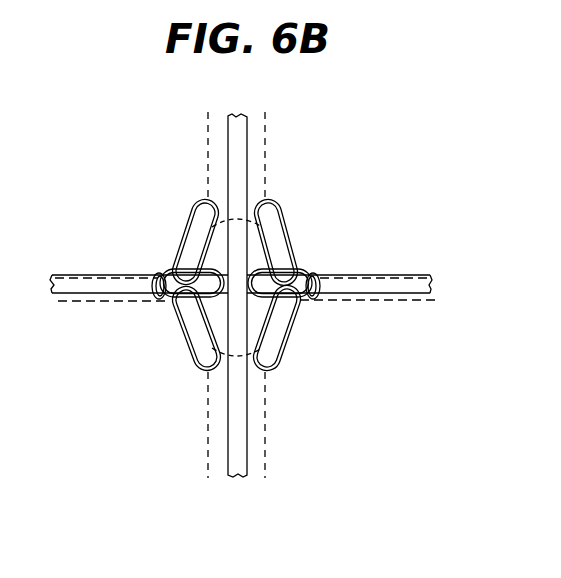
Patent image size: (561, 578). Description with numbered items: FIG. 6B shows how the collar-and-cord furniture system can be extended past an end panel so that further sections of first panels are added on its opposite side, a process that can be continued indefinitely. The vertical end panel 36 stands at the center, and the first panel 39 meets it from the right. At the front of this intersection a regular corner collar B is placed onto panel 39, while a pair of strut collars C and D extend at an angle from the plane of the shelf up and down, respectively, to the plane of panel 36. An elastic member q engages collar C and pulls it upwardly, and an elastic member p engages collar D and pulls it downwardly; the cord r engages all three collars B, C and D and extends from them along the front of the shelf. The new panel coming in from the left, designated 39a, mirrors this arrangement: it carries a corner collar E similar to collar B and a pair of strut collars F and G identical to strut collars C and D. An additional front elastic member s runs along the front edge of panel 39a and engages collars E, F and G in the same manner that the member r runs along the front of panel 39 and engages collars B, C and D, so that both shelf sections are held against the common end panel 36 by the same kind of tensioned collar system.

The end panel 36 is at (244, 168).
The first panel 39 is at (385, 288).
The new panel 39a is at (93, 288).
The elastic member q is at (266, 119).
The elastic member p is at (266, 413).
The front elastic member s is at (50, 277).
The cord r is at (438, 275).
The corner collar E is at (157, 267).
The regular corner collar B is at (323, 268).
The strut collar F is at (184, 214).
The strut collar G is at (184, 350).
The strut collar C is at (293, 222).
The strut collar D is at (298, 331).